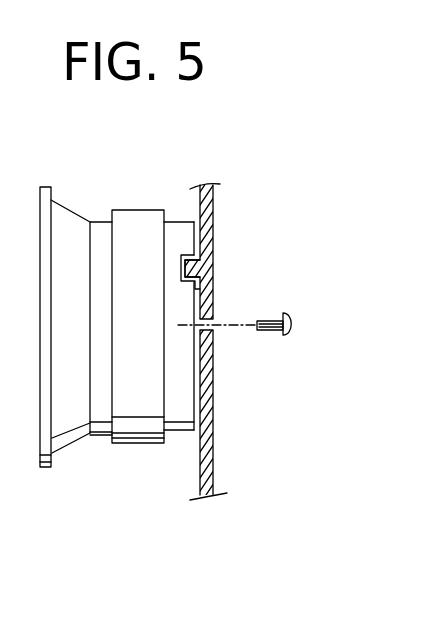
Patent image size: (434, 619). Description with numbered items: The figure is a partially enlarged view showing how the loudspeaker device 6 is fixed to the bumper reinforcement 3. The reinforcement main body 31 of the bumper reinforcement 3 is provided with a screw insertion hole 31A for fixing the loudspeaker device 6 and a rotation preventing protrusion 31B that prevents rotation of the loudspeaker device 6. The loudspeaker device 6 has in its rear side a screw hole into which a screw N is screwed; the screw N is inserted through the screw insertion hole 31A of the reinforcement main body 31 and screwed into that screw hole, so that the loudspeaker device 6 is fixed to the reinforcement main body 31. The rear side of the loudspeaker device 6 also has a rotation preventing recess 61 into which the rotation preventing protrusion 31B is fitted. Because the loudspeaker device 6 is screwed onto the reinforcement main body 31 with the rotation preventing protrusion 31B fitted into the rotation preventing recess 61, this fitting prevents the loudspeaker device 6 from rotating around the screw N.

The bumper reinforcement 3 is at (242, 335).
The reinforcement main body 31 is at (242, 335).
The screw insertion hole 31A is at (215, 318).
The rotation preventing protrusion 31B is at (198, 270).
The loudspeaker device 6 is at (120, 359).
The rotation preventing recess 61 is at (192, 253).
The screw N is at (293, 324).